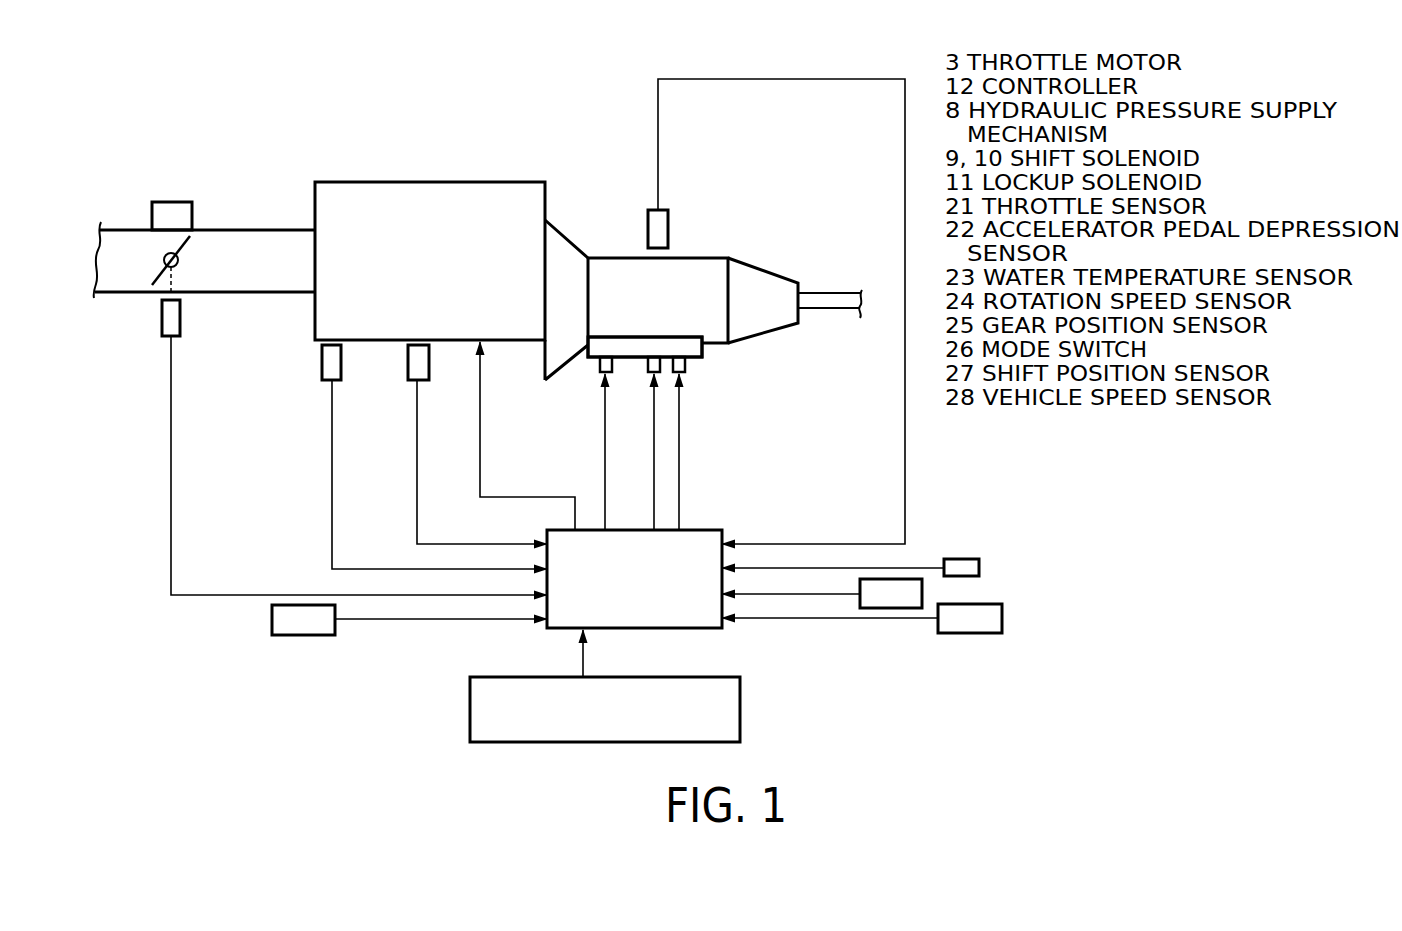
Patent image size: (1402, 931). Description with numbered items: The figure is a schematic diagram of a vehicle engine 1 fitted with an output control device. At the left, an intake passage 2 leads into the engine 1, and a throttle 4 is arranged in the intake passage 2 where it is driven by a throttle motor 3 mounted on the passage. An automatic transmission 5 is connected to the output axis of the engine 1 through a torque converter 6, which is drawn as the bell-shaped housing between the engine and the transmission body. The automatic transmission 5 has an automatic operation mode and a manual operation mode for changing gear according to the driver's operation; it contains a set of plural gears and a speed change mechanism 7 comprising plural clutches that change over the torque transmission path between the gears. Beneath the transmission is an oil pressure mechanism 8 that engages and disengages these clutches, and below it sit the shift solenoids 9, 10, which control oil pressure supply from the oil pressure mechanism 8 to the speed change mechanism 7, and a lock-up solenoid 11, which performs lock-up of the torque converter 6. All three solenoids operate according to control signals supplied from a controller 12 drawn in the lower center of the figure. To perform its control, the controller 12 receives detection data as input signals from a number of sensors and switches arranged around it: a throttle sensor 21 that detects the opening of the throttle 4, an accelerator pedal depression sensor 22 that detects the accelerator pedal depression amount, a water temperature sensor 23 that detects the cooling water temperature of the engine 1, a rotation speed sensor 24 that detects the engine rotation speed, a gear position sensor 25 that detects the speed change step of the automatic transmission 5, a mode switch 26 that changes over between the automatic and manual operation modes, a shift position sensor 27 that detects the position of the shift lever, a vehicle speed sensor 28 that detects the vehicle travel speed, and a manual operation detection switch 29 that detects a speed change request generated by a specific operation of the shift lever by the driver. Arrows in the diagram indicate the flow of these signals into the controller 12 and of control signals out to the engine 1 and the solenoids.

The vehicle engine 1 is at (502, 180).
The intake passage 2 is at (262, 228).
The throttle motor 3 is at (176, 200).
The throttle 4 is at (162, 275).
The automatic transmission 5 is at (703, 347).
The torque converter 6 is at (570, 240).
The speed change mechanism 7 is at (730, 258).
The oil pressure mechanism 8 is at (704, 352).
The shift solenoid 9 is at (646, 375).
The shift solenoid 10 is at (686, 375).
The lock-up solenoid 11 is at (598, 375).
The controller 12 is at (708, 528).
The throttle sensor 21 is at (180, 325).
The accelerator pedal depression sensor 22 is at (271, 622).
The water temperature sensor 23 is at (320, 375).
The rotation speed sensor 24 is at (406, 374).
The gear position sensor 25 is at (652, 208).
The mode switch 26 is at (966, 558).
The shift position sensor 27 is at (922, 585).
The vehicle speed sensor 28 is at (1002, 616).
The manual operation detection switch 29 is at (741, 694).